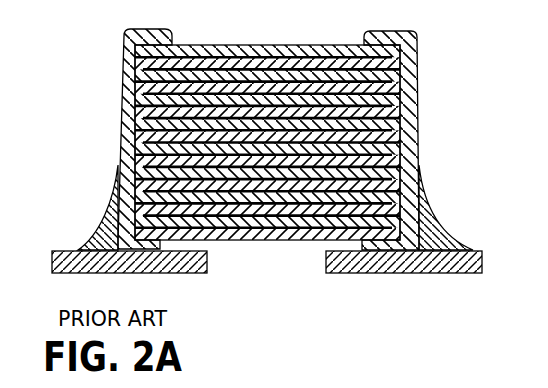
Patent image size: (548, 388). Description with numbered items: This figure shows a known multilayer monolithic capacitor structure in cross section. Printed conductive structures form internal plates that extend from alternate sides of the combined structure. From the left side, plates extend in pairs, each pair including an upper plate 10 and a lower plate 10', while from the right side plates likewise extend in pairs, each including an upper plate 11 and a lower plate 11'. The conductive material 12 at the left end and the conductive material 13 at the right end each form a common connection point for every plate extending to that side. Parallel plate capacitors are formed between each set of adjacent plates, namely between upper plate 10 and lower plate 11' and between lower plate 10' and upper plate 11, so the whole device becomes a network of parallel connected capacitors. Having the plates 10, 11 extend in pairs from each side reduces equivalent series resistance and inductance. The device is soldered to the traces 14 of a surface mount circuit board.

The upper plate 10 is at (240, 136).
The lower plate 10' is at (240, 120).
The upper plate 11 is at (263, 114).
The lower plate 11' is at (271, 110).
The conductive material 12 is at (124, 43).
The conductive material 13 is at (409, 80).
The traces 14 is at (62, 251).